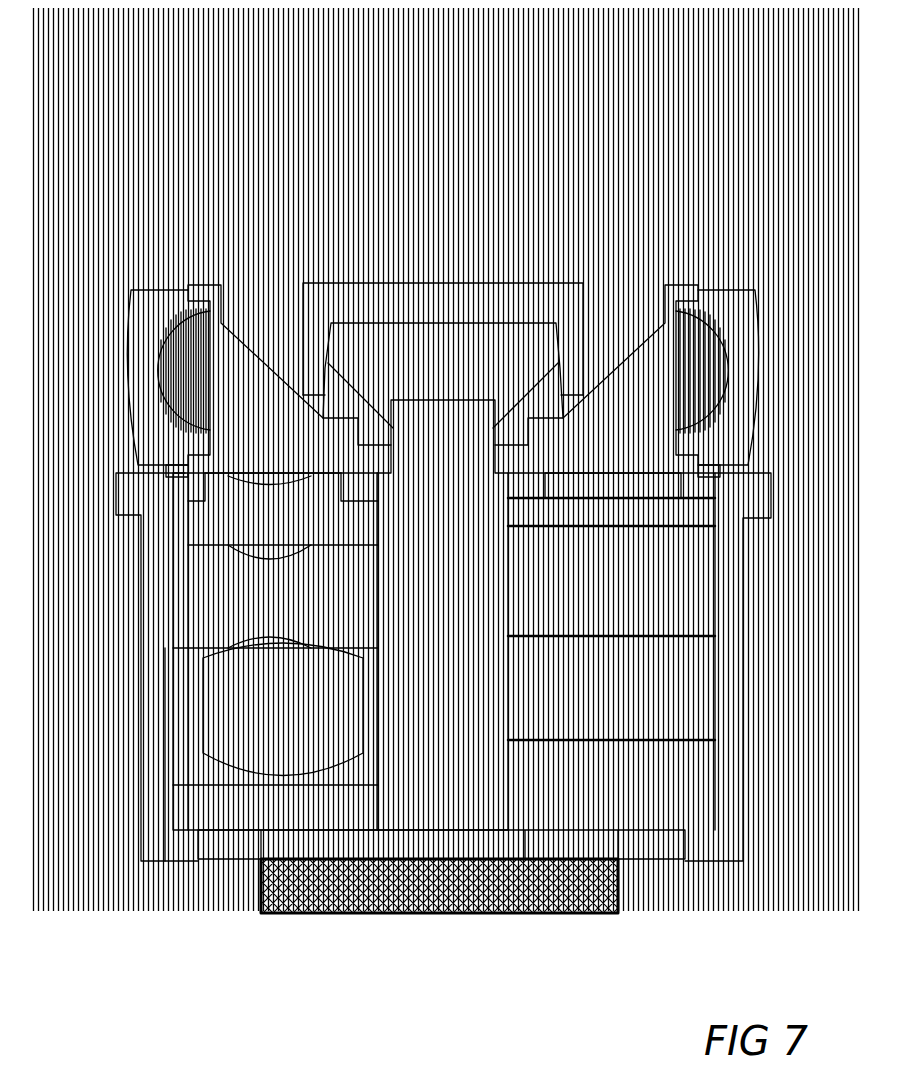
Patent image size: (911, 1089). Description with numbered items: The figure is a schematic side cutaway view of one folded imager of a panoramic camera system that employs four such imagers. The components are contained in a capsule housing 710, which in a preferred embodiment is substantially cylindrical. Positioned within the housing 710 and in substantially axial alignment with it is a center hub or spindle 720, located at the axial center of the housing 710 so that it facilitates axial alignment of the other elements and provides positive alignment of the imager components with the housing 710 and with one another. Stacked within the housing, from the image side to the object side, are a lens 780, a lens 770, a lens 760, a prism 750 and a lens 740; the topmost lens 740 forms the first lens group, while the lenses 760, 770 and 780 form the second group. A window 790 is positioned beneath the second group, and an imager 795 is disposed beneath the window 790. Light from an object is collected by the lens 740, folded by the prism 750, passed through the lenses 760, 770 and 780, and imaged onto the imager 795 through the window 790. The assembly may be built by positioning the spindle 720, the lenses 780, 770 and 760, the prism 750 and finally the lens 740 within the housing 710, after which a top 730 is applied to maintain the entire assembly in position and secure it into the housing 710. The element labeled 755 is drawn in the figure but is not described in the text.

The capsule housing 710 is at (750, 478).
The spindle 720 is at (442, 615).
The top 730 is at (485, 283).
The lens 740 is at (122, 350).
The prism 750 is at (222, 320).
The lens element 755 is at (237, 467).
The lens 760 is at (208, 511).
The lens 770 is at (208, 594).
The lens 780 is at (192, 688).
The window 790 is at (253, 825).
The imager 795 is at (258, 906).